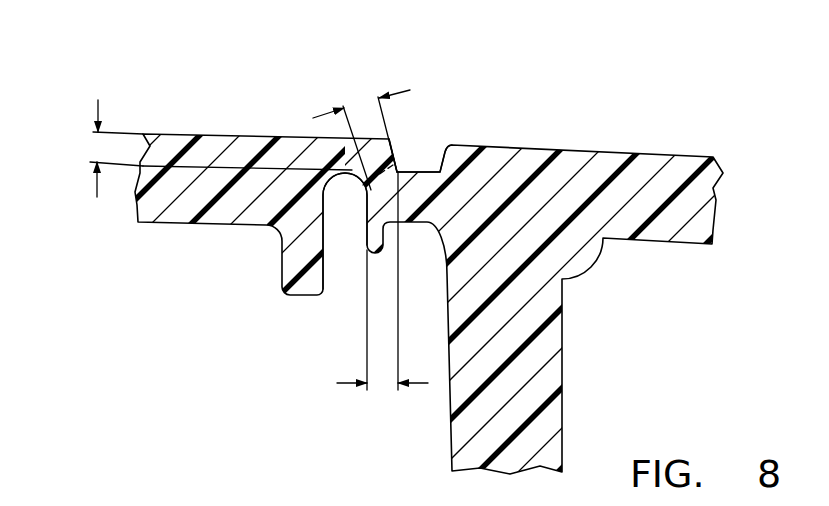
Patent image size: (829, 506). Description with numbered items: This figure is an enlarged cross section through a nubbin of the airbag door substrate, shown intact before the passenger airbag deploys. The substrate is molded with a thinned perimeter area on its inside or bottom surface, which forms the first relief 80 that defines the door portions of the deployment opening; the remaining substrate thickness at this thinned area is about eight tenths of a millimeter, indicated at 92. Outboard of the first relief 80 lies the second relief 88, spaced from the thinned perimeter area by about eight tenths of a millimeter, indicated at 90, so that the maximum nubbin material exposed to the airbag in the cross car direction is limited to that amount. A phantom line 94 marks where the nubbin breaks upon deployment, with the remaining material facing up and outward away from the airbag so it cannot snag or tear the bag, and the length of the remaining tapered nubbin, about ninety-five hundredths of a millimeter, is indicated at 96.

The first relief 80 is at (343, 213).
The second relief 88 is at (423, 160).
The spacing of second relief from first relief 90 is at (380, 377).
The substrate thickness at first relief 92 is at (100, 150).
The phantom line of broken nubbin 94 is at (389, 169).
The length of remaining tapered nubbin 96 is at (362, 108).